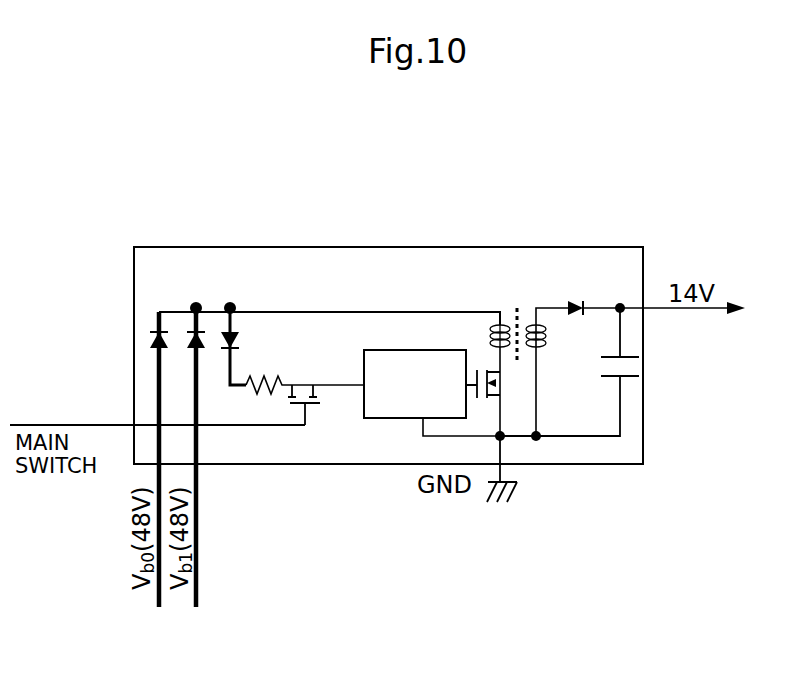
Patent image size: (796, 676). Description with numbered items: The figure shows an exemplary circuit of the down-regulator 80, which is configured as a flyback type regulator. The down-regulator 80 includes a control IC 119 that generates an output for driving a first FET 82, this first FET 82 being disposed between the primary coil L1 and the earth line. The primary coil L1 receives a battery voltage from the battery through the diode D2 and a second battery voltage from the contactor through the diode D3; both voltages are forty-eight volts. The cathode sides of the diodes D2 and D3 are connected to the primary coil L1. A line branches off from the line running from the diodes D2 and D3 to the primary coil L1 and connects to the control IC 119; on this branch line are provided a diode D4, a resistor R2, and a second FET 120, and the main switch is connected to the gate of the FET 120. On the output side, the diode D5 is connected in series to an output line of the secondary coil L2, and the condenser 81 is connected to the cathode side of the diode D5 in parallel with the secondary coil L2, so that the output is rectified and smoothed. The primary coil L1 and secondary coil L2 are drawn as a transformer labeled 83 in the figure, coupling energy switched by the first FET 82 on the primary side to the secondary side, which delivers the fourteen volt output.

The down-regulator 80 is at (473, 238).
The condenser 81 is at (637, 368).
The first FET 82 is at (510, 380).
The transformer 83 is at (509, 313).
The control IC 119 is at (380, 418).
The FET 120 is at (315, 377).
The diode D2 is at (157, 350).
The diode D3 is at (192, 352).
The diode D4 is at (225, 357).
The diode D5 is at (570, 298).
The primary coil L1 is at (487, 330).
The secondary coil L2 is at (552, 338).
The resistor R2 is at (263, 373).